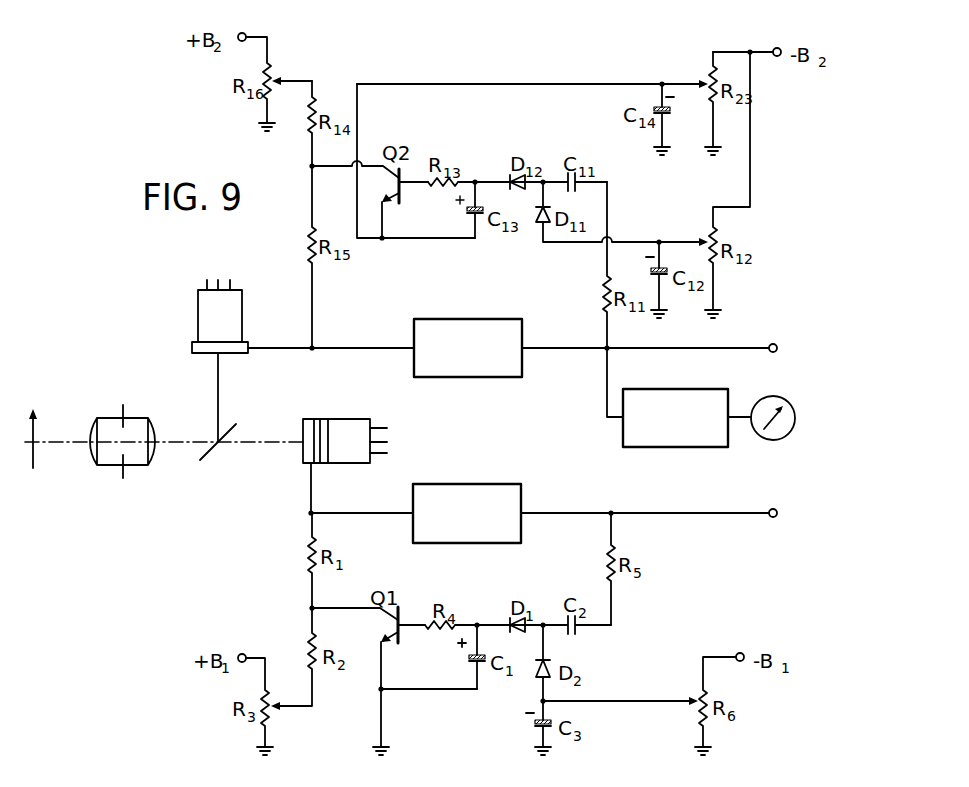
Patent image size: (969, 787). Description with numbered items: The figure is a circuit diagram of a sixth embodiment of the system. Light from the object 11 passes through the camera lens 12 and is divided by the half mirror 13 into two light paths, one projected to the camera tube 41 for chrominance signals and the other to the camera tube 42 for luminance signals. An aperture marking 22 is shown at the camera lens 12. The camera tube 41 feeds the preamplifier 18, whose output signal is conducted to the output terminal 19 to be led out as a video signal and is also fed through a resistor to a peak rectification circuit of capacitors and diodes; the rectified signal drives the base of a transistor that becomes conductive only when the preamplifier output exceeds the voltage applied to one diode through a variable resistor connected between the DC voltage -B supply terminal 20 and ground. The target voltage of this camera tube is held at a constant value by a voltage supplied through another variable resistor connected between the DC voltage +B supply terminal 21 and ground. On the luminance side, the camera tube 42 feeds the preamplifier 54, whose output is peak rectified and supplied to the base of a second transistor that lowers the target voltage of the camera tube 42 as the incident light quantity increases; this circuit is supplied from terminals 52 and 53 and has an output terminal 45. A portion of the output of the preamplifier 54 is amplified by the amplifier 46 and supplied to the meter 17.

The object 11 is at (37, 430).
The camera lens 12 is at (137, 418).
The half mirror 13 is at (207, 458).
The meter 17 is at (795, 418).
The preamplifier 18 is at (480, 484).
The output terminal 19 is at (772, 509).
The DC voltage -B supply terminal 20 is at (740, 653).
The DC voltage +B supply terminal 21 is at (245, 654).
The aperture 22 is at (123, 478).
The camera tube for chrominance signals 41 is at (349, 419).
The camera tube for luminance signals 42 is at (242, 303).
The output terminal 45 is at (774, 344).
The amplifier 46 is at (721, 389).
The positive supply terminal +B2 52 is at (245, 33).
The negative supply terminal -B2 53 is at (778, 48).
The preamplifier 54 is at (472, 319).